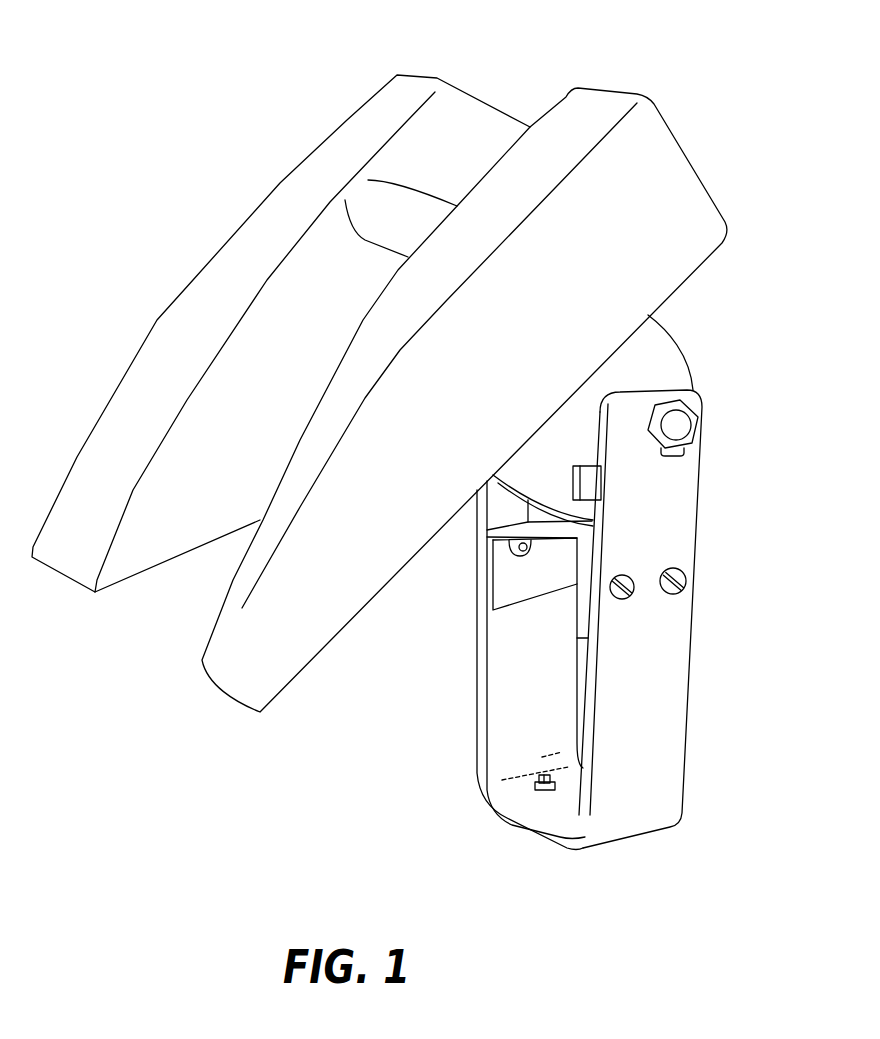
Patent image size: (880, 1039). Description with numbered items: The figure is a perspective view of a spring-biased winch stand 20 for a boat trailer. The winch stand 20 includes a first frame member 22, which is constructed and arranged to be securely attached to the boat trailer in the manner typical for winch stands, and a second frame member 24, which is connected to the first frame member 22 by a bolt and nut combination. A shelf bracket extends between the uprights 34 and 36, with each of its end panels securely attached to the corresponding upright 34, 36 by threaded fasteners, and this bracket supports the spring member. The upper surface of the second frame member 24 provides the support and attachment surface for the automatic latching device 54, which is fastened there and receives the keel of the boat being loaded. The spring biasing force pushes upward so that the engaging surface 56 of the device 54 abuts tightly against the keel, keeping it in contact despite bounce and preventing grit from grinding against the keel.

The winch stand 20 is at (720, 126).
The first frame member 22 is at (475, 678).
The second frame member 24 is at (655, 348).
The upright 34 is at (477, 725).
The upright 36 is at (670, 718).
The automatic latching device 54 is at (453, 112).
The engaging surface 56 is at (147, 382).